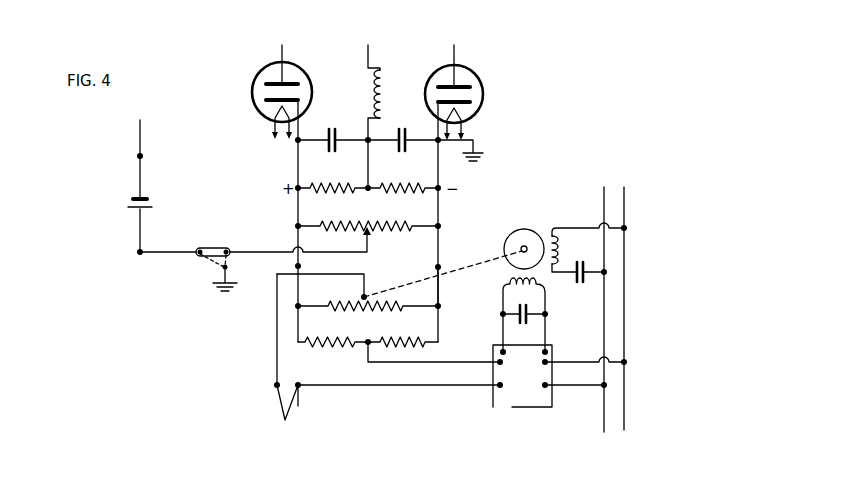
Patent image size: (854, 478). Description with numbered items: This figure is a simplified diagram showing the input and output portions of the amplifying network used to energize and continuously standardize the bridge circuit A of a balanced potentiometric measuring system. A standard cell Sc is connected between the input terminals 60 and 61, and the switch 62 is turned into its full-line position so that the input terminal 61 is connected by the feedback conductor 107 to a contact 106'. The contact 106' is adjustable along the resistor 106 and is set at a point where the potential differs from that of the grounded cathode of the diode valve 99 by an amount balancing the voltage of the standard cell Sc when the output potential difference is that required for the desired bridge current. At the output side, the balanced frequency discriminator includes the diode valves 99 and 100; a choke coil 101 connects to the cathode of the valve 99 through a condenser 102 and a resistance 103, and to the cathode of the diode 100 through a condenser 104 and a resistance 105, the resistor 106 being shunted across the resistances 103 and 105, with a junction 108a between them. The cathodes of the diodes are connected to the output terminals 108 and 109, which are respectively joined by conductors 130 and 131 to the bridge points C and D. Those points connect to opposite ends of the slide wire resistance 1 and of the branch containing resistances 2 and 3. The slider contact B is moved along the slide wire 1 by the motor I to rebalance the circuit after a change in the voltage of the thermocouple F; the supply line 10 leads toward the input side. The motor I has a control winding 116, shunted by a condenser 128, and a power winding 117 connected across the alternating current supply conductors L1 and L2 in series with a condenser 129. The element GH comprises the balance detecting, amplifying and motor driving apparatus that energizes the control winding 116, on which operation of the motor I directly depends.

The supply line 10 is at (140, 130).
The input terminal 60 is at (138, 156).
The standard cell Sc is at (150, 207).
The input terminal 61 is at (140, 255).
The switch 62 is at (200, 247).
The feedback conductor 107 is at (255, 252).
The output terminal 109 is at (296, 266).
The diode valve 100 is at (252, 92).
The diode valve 99 is at (483, 94).
The choke coil 101 is at (387, 82).
The condenser 102 is at (403, 128).
The condenser 104 is at (333, 128).
The resistance 105 is at (318, 184).
The resistance 103 is at (390, 184).
The junction 108a is at (368, 192).
The resistor 106 is at (368, 238).
The contact 106' is at (337, 246).
The output terminal 108 is at (425, 268).
The conductor 130 is at (441, 294).
The conductor 131 is at (299, 284).
The bridge circuit point D is at (297, 304).
The slider contact B is at (361, 297).
The bridge circuit point C is at (447, 308).
The slide wire resistance 1 is at (354, 312).
The resistance 2 is at (397, 336).
The resistance 3 is at (324, 347).
The bridge circuit A is at (439, 331).
The thermocouple F is at (290, 410).
The motor I is at (524, 229).
The power winding 117 is at (559, 250).
The condenser 129 is at (586, 283).
The control winding 116 is at (503, 298).
The condenser 128 is at (531, 319).
The balance detecting, amplifying and motor driving apparatus GH is at (548, 407).
The alternating current supply conductor L1 is at (604, 190).
The alternating current supply conductor L2 is at (629, 176).